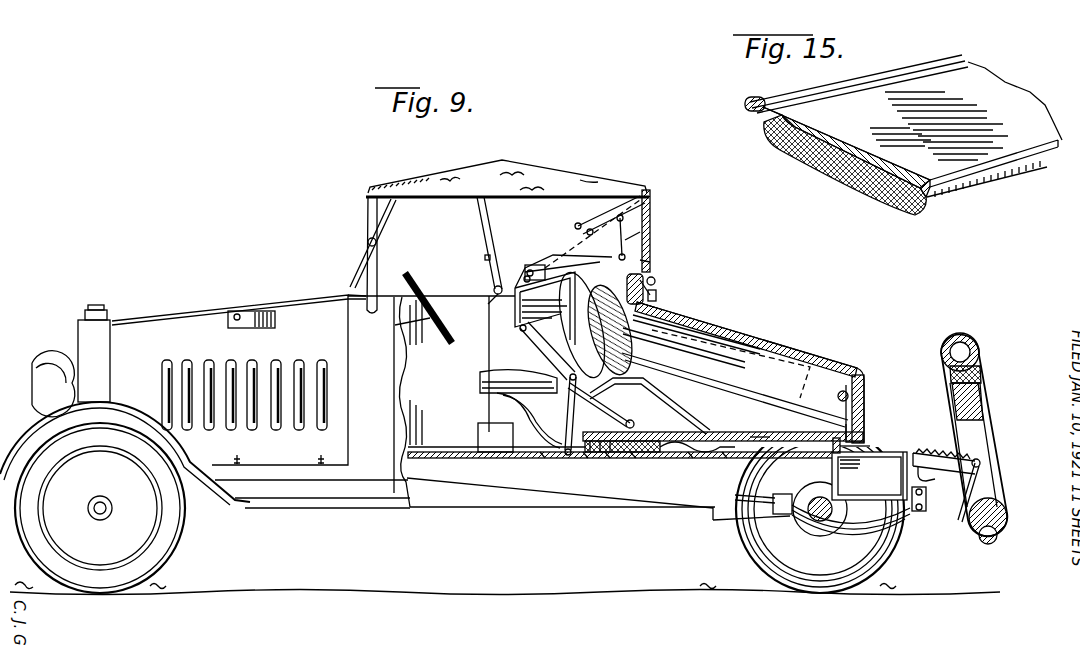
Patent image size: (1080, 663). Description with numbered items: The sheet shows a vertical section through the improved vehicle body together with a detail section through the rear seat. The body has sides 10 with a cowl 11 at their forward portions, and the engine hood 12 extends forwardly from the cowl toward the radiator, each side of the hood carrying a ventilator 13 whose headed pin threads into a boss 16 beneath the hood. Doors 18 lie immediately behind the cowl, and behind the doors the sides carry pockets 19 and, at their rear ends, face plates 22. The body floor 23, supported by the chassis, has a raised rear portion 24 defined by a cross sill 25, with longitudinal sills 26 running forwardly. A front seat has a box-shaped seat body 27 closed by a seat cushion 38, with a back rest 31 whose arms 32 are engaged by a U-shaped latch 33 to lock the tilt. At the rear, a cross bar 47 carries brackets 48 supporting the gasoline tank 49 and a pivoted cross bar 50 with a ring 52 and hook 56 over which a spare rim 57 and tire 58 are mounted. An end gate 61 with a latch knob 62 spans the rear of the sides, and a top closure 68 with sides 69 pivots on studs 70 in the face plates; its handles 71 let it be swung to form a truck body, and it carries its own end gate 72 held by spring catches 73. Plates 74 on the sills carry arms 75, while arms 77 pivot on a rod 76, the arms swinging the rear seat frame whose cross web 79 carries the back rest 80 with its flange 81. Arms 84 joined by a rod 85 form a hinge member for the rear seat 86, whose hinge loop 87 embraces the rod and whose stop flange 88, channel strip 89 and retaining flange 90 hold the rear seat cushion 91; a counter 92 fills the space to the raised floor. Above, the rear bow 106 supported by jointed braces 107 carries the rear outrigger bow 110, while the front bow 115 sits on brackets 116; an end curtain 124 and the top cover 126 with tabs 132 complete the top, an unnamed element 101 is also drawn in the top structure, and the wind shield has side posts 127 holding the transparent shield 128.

In FIG. 9, the sides 10 is at (529, 401).
In FIG. 9, the cowl 11 is at (346, 296).
In FIG. 9, the engine hood 12 is at (177, 322).
In FIG. 9, the ventilator 13 is at (248, 315).
In FIG. 9, the bosses 16 is at (727, 460).
In FIG. 9, the doors 18 is at (518, 325).
In FIG. 9, the pockets 19 is at (493, 301).
In FIG. 9, the face plates 22 is at (848, 428).
In FIG. 9, the body floor 23 is at (543, 460).
In FIG. 9, the raised offset rear end portion 24 is at (768, 430).
In FIG. 9, the cross sill 25 is at (758, 436).
In FIG. 9, the longitudinal sills 26 is at (585, 460).
In FIG. 9, the seat body 27 is at (517, 440).
In FIG. 9, the back rest 31 is at (582, 325).
In FIG. 9, the arms 32 is at (521, 409).
In FIG. 9, the latch 33 is at (495, 437).
In FIG. 9, the seat cushion 38 is at (478, 378).
In FIG. 9, the cross bar 47 is at (869, 469).
In FIG. 9, the brackets 48 is at (914, 452).
In FIG. 9, the gasoline tank 49 is at (912, 516).
In FIG. 9, the cross bar of tire holder 50 is at (963, 500).
In FIG. 9, the ring 52 is at (992, 412).
In FIG. 9, the hook 56 is at (982, 374).
In FIG. 9, the rim 57 is at (994, 482).
In FIG. 9, the tire 58 is at (968, 340).
In FIG. 9, the end gate 61 is at (858, 404).
In FIG. 9, the knob 62 is at (866, 378).
In FIG. 9, the top closure 68 is at (726, 325).
In FIG. 9, the sides of closure 69 is at (743, 372).
In FIG. 9, the pivot studs 70 is at (837, 397).
In FIG. 9, the handles 71 is at (658, 293).
In FIG. 9, the end gate of closure 72 is at (655, 331).
In FIG. 9, the spring catches 73 is at (640, 345).
In FIG. 9, the upstanding plates 74 is at (607, 460).
In FIG. 9, the arms 75 is at (578, 414).
In FIG. 9, the rod 76 is at (724, 460).
In FIG. 9, the arms 77 is at (683, 418).
In FIG. 9, the cross web 79 is at (656, 279).
In FIG. 9, the back rest 80 is at (672, 307).
In FIG. 9, the flange 81 is at (600, 395).
In FIG. 9, the arms 84 is at (690, 460).
In FIG. 9, the connecting rod 85 is at (628, 433).
In FIG. 9, the rear seat 86 is at (622, 426).
In FIG. 15, the rear seat 86 is at (906, 117).
In FIG. 15, the hinge loop 87 is at (967, 188).
In FIG. 15, the stop flange 88 is at (926, 202).
In FIG. 15, the channel strip 89 is at (752, 97).
In FIG. 15, the retaining flange 90 is at (766, 123).
In FIG. 9, the rear seat cushion 91 is at (633, 460).
In FIG. 15, the rear seat cushion 91 is at (830, 172).
In FIG. 9, the counter 92 is at (727, 442).
In FIG. 9, the rod 101 is at (628, 240).
In FIG. 9, the rear bow 106 is at (542, 267).
In FIG. 9, the jointed braces 107 is at (647, 228).
In FIG. 9, the rear outrigger bow 110 is at (578, 224).
In FIG. 9, the front bow 115 is at (492, 218).
In FIG. 9, the brackets 116 is at (495, 303).
In FIG. 9, the end curtain 124 is at (656, 256).
In FIG. 9, the top cover 126 is at (548, 180).
In FIG. 9, the side posts 127 is at (367, 221).
In FIG. 9, the transparent shield 128 is at (390, 215).
In FIG. 9, the tabs 132 is at (648, 190).